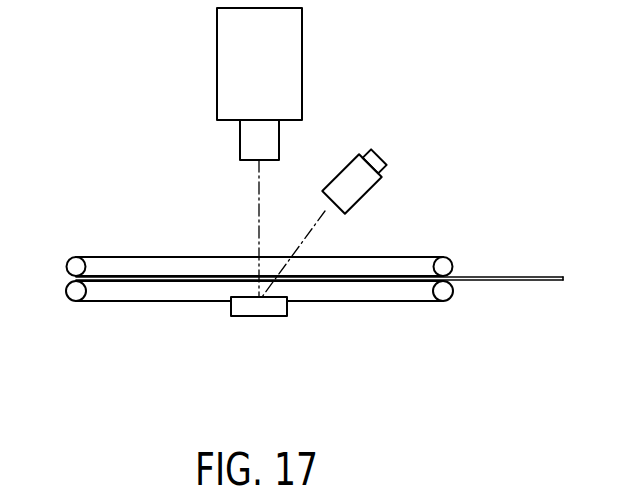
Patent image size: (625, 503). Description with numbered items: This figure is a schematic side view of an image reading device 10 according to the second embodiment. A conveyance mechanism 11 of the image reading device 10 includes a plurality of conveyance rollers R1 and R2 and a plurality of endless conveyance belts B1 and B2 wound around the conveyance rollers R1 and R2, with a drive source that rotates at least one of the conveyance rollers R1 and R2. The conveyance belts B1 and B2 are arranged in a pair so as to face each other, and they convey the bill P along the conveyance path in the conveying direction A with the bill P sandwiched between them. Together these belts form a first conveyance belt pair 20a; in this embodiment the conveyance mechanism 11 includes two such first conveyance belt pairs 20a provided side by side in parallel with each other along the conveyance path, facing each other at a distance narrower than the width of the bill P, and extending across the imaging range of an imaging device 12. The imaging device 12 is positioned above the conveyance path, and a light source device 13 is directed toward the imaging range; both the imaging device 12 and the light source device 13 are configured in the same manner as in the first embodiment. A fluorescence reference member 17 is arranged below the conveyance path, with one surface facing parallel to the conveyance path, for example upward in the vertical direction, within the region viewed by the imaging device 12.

The image reading device 10 is at (127, 130).
The conveyance mechanism 11 is at (174, 325).
The imaging device 12 is at (296, 55).
The light source device 13 is at (365, 170).
The fluorescence reference member 17 is at (253, 316).
The first conveyance belt pair 20a is at (378, 302).
The conveyance belt B1 is at (128, 256).
The conveyance belt B2 is at (115, 301).
The conveyance roller R1 is at (447, 267).
The conveyance roller R2 is at (75, 267).
The bill P is at (524, 277).
The conveying direction A is at (448, 244).